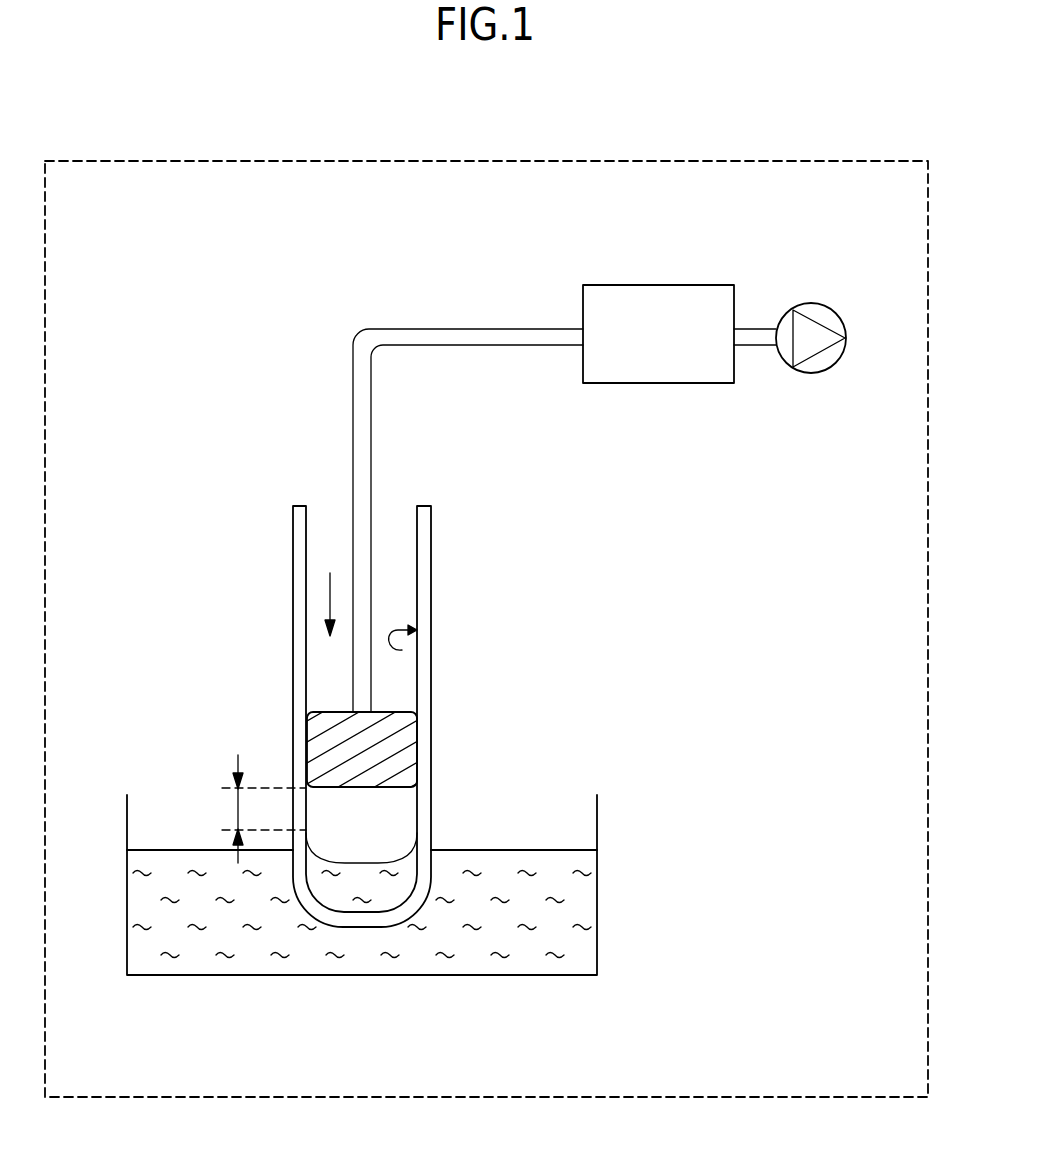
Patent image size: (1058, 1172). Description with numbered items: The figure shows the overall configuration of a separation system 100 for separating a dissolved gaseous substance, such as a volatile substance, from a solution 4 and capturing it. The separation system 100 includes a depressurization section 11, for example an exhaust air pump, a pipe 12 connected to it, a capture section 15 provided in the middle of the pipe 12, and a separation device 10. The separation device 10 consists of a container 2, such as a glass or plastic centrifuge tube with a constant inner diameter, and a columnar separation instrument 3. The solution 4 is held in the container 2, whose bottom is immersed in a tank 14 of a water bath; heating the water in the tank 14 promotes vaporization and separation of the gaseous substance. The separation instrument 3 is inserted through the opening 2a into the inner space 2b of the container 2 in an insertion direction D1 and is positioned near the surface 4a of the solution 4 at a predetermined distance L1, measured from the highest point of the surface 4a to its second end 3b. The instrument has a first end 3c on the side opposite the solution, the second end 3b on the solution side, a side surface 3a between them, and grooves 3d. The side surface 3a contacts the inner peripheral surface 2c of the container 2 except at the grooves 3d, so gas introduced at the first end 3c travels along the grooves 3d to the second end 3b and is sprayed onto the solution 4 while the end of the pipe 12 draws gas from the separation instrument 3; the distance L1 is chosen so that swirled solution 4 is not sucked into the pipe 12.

The separation system 100 is at (795, 158).
The separation device 10 is at (287, 486).
The container 2 is at (431, 607).
The opening 2a is at (392, 500).
The inner space 2b is at (405, 564).
The inner peripheral surface 2c is at (400, 652).
The separation instrument 3 is at (513, 686).
The side surface 3a is at (410, 762).
The second end 3b is at (398, 789).
The first end 3c is at (398, 713).
The grooves 3d is at (410, 740).
The solution 4 is at (336, 887).
The surface 4a is at (374, 863).
The depressurization section 11 is at (808, 303).
The pipe 12 is at (485, 329).
The tank 14 is at (597, 912).
The capture section 15 is at (658, 285).
The insertion direction D1 is at (330, 604).
The predetermined distance L1 is at (264, 796).